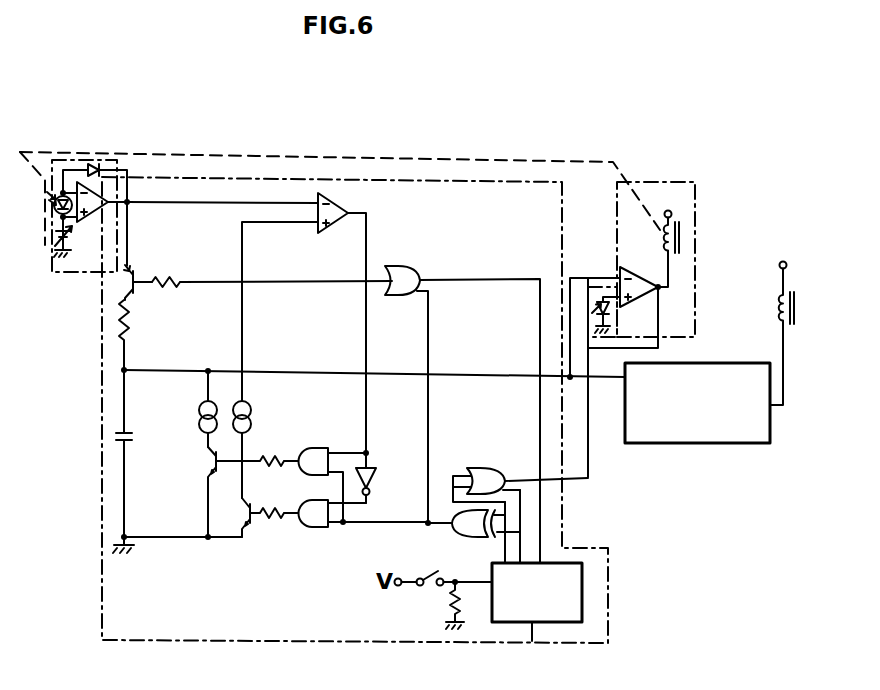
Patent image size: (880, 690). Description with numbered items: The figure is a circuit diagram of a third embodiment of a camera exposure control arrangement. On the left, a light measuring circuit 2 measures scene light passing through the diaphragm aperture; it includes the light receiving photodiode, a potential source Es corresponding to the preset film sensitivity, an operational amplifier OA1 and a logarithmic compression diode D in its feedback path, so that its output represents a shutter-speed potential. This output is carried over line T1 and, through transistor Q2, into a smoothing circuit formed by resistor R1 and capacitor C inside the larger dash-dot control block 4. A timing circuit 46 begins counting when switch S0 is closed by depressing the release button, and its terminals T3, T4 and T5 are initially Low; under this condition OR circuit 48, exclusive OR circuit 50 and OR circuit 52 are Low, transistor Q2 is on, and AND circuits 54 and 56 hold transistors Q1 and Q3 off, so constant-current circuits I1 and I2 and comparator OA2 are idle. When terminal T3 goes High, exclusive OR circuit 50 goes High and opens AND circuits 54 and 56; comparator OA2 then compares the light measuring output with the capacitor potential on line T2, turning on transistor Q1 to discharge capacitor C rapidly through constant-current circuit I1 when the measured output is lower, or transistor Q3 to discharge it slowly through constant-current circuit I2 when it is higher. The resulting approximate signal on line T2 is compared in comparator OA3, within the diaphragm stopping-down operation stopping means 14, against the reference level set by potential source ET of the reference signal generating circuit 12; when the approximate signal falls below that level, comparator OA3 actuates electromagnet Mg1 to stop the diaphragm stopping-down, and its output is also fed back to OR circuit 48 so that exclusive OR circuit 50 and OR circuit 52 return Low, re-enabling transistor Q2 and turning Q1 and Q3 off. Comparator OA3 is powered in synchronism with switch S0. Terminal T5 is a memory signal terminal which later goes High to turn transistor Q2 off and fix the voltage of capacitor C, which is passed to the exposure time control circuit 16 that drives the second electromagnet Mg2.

The light measuring circuit 2 is at (90, 279).
The control circuit 4 is at (100, 573).
The reference signal generating circuit 12 is at (592, 286).
The diaphragm stopping-down operation stopping means 14 is at (639, 181).
The exposure time control circuit 16 is at (714, 445).
The timing circuit 46 is at (513, 619).
The OR circuit 48 is at (492, 468).
The exclusive OR circuit 50 is at (457, 534).
The OR circuit 52 is at (406, 264).
The AND circuit 54 is at (325, 440).
The AND circuit 56 is at (312, 523).
The logarithmic compression diode D is at (96, 163).
The operational amplifier OA1 is at (100, 192).
The comparator OA2 is at (334, 195).
The comparator OA3 is at (639, 277).
The potential source Es is at (66, 237).
The transistor Q1 is at (206, 461).
The transistor Q2 is at (120, 286).
The transistor Q3 is at (220, 513).
The resistor R1 is at (130, 320).
The capacitor C is at (118, 432).
The constant-current circuit I1 is at (200, 401).
The constant-current circuit I2 is at (250, 400).
The signal line T1 is at (291, 201).
The line T2 is at (300, 225).
The terminal T3 is at (502, 550).
The terminal T4 is at (543, 531).
The terminal T5 is at (540, 486).
The switch S0 is at (427, 587).
The potential source ET is at (609, 316).
The electromagnet Mg1 is at (686, 231).
The magnet Mg2 is at (783, 313).